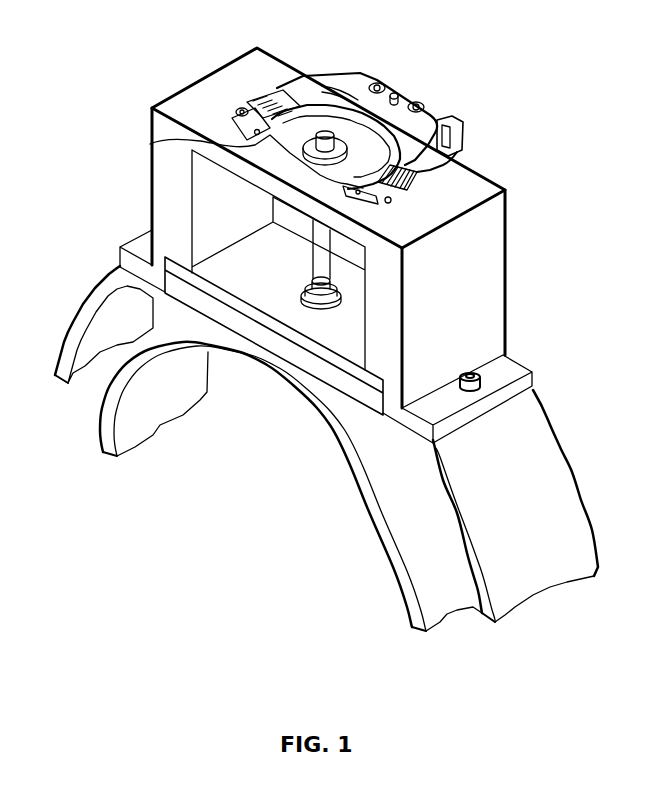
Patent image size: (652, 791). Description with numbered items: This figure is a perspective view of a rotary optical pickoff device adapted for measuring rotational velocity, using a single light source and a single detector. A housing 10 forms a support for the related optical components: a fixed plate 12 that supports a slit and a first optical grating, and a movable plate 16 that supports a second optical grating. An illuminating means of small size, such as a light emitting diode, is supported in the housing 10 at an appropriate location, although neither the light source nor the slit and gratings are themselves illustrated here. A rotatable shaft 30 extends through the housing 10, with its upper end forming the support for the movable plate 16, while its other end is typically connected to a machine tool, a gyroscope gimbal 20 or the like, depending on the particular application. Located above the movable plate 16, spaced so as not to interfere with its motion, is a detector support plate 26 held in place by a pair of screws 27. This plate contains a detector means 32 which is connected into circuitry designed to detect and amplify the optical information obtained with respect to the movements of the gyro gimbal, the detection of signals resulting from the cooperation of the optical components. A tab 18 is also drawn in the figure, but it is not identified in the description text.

The housing 10 is at (506, 302).
The fixed plate 12 is at (213, 110).
The movable plate 16 is at (255, 100).
The locking tab 18 is at (455, 158).
The gyroscope gimbal 20 is at (108, 404).
The detector support plate 26 is at (347, 76).
The screws 27 is at (378, 83).
The rotatable shaft 30 is at (150, 144).
The detector means 32 is at (396, 94).